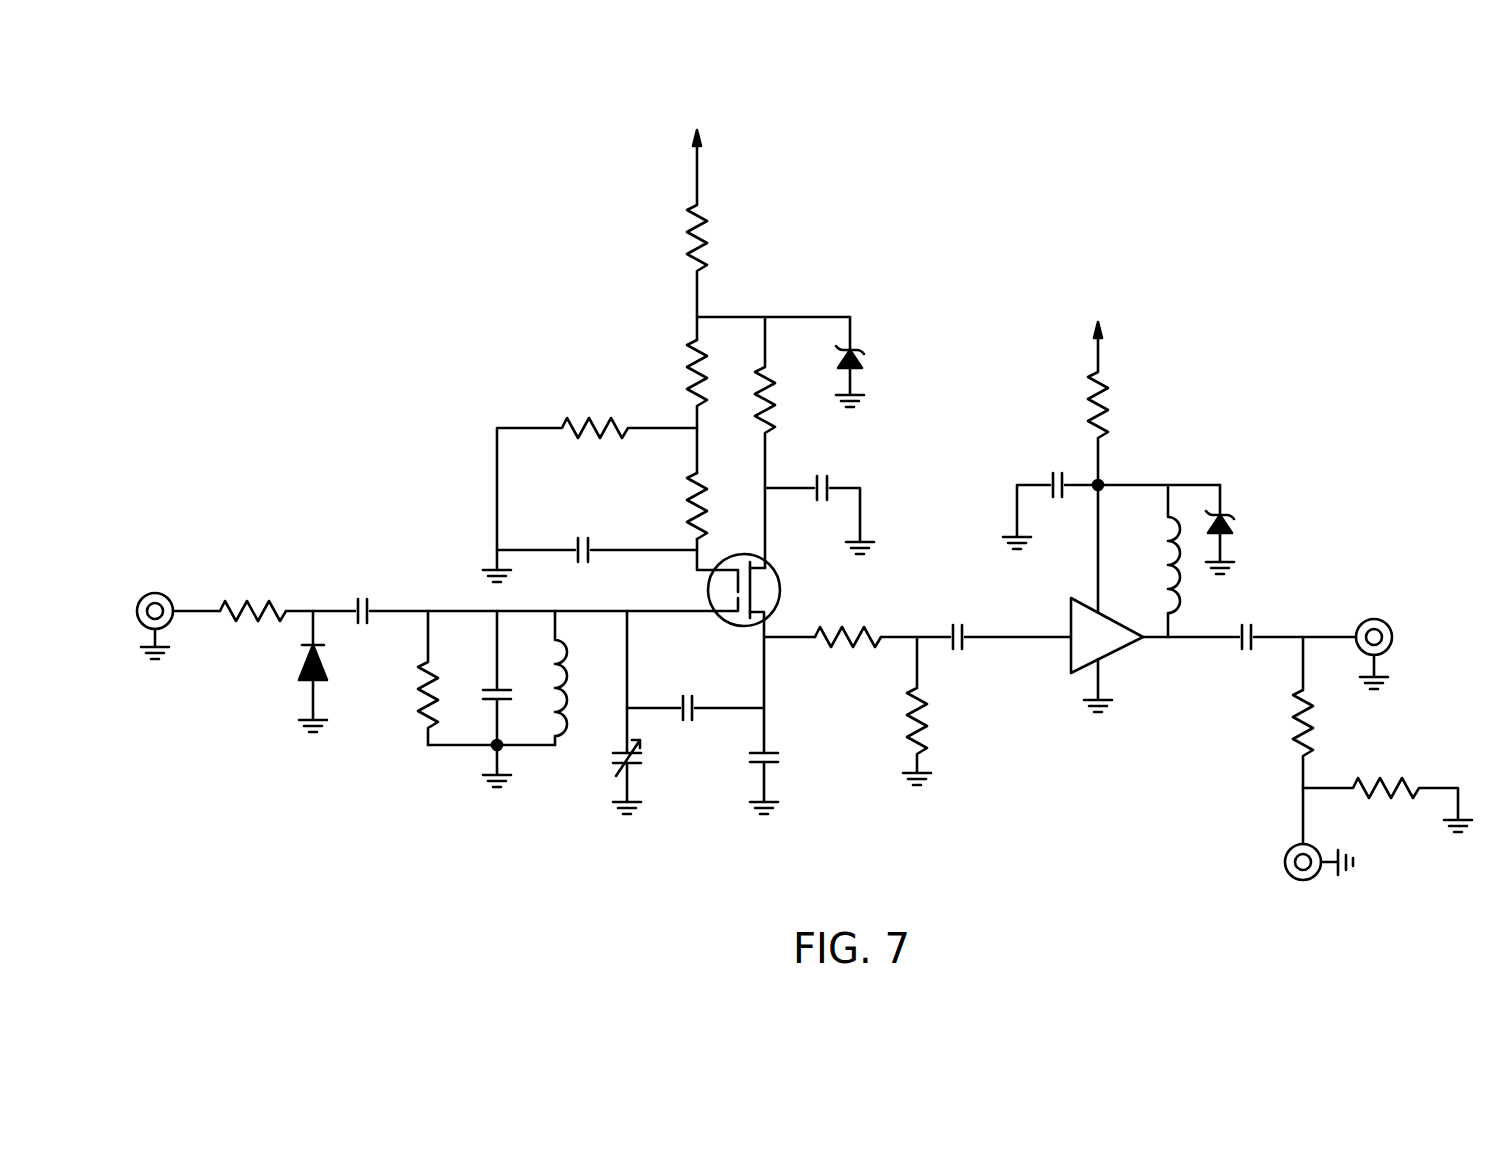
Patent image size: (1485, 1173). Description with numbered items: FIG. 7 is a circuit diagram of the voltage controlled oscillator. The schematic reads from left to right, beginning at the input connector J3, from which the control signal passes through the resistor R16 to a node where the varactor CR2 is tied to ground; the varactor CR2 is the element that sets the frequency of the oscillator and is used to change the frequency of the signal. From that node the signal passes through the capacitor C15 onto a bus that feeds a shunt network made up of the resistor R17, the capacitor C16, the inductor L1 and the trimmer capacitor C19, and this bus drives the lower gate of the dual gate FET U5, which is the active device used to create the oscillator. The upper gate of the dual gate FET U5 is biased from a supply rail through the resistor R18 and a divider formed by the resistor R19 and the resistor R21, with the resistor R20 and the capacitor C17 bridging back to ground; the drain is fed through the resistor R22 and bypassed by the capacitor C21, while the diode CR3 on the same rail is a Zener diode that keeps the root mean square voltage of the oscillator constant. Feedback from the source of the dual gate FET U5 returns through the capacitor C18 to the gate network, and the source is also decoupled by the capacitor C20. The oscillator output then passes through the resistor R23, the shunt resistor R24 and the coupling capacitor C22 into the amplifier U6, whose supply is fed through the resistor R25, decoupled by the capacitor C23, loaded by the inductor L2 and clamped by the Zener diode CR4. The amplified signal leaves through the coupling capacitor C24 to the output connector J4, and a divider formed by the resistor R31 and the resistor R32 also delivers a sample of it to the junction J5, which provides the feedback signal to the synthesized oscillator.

The input coaxial connector J3 is at (155, 607).
The resistor R16 is at (253, 592).
The varactor CR2 is at (339, 671).
The capacitor C15 is at (363, 593).
The resistor R17 is at (453, 678).
The capacitor C16 is at (515, 699).
The inductor L1 is at (578, 678).
The variable capacitor C19 is at (598, 712).
The capacitor C18 is at (680, 692).
The capacitor C20 is at (790, 778).
The dual gate FET U5 is at (762, 590).
The resistor R18 is at (722, 235).
The resistor R19 is at (671, 406).
The resistor R20 is at (590, 484).
The resistor R21 is at (721, 506).
The capacitor C17 is at (597, 531).
The resistor R22 is at (791, 442).
The capacitor C21 is at (819, 501).
The zener diode CR3 is at (873, 362).
The resistor R23 is at (848, 621).
The capacitor C22 is at (959, 620).
The resistor R24 is at (939, 711).
The amplifier U6 is at (1107, 598).
The resistor R25 is at (1122, 406).
The capacitor C23 is at (1040, 495).
The inductor L2 is at (1154, 561).
The zener diode CR4 is at (1247, 529).
The capacitor C24 is at (1248, 620).
The output coaxial connector J4 is at (1374, 639).
The resistor R31 is at (1276, 740).
The resistor R32 is at (1387, 790).
The junction J5 is at (1306, 848).